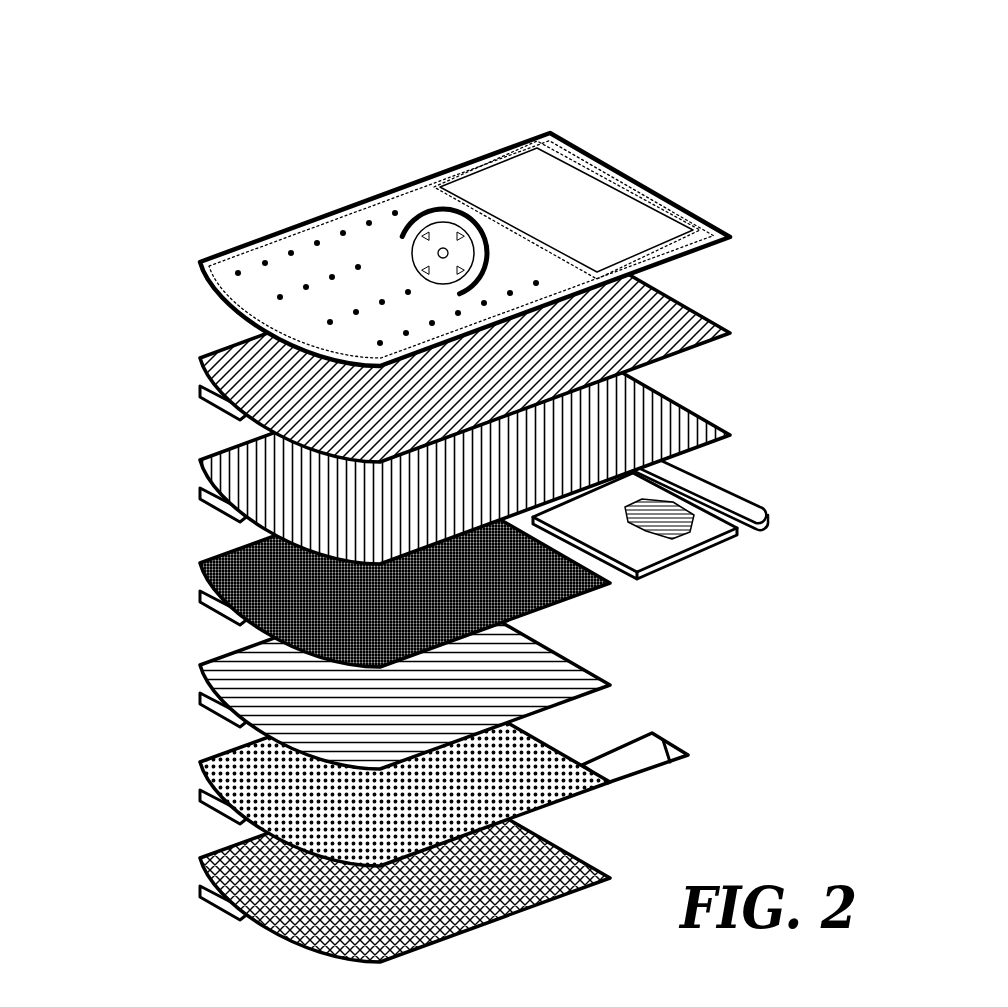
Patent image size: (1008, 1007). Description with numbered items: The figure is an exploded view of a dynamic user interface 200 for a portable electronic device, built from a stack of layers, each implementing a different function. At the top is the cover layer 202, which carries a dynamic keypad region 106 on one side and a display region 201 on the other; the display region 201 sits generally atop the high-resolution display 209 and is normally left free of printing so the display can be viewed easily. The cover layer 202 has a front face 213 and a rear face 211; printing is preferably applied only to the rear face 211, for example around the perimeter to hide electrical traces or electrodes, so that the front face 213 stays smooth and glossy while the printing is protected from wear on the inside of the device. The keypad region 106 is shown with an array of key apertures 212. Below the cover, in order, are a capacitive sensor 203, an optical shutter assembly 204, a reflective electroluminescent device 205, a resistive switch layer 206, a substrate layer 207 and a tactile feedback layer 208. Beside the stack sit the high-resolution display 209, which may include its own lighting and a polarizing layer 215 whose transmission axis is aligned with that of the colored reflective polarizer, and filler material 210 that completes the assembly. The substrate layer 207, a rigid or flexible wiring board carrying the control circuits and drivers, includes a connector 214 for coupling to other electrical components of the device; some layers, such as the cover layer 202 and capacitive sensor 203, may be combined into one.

The dynamic user interface 200 is at (207, 112).
The display region 201 is at (424, 222).
The cover layer 202 is at (627, 175).
The dynamic keypad region 106 is at (305, 225).
The keypad apertures 212 is at (318, 266).
The front face 213 is at (222, 272).
The rear face 211 is at (216, 308).
The capacitive sensor 203 is at (680, 300).
The optical shutter assembly 204 is at (677, 415).
The reflective electroluminescent device 205 is at (228, 560).
The resistive switch layer 206 is at (233, 663).
The substrate layer 207 is at (235, 776).
The tactile feedback layer 208 is at (235, 865).
The high-resolution display 209 is at (730, 500).
The filler material 210 is at (647, 550).
The polarizing layer 215 is at (705, 482).
The connector 214 is at (665, 735).